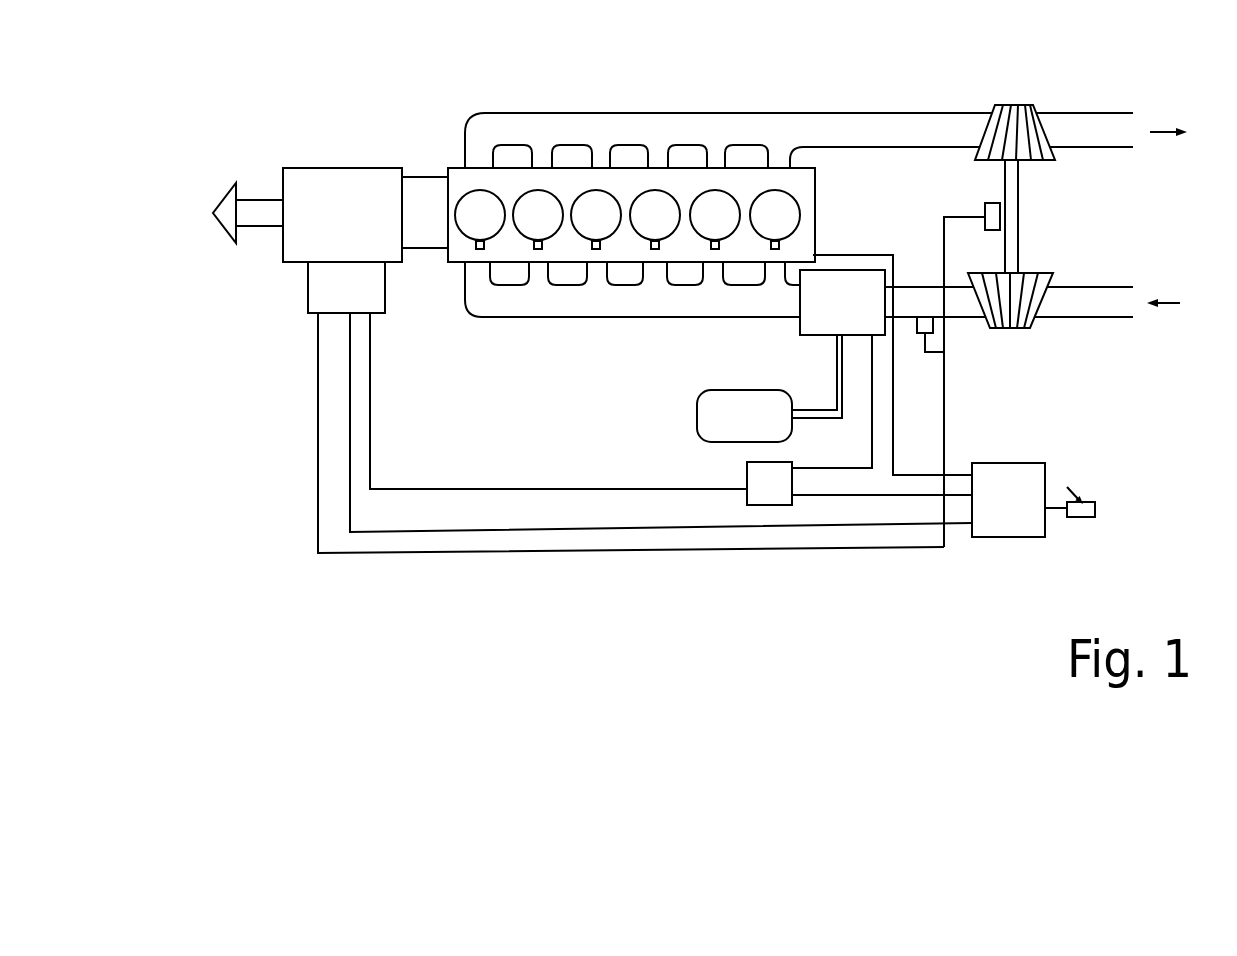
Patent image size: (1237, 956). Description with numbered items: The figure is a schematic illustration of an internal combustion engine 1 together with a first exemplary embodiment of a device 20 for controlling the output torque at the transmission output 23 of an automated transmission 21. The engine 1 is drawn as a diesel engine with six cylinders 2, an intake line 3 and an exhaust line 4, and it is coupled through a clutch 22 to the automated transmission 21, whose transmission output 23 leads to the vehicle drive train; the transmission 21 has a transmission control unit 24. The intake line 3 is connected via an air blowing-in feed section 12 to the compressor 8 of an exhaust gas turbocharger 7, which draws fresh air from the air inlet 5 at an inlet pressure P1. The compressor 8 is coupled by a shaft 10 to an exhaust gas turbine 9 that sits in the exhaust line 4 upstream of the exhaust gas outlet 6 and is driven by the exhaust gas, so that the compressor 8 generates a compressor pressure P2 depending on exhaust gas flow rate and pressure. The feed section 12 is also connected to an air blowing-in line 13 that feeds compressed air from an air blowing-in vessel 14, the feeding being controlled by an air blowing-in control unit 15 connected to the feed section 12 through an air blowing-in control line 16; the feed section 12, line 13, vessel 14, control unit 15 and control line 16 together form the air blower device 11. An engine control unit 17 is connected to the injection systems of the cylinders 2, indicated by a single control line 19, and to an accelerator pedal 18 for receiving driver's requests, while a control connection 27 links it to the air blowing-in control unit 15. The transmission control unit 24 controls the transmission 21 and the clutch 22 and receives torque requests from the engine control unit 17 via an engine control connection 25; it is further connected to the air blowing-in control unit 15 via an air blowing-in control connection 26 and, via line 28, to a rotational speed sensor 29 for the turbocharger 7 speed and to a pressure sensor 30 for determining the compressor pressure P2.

The internal combustion engine 1 is at (455, 175).
The cylinders 2 is at (476, 208).
The intake line 3 is at (570, 303).
The exhaust line 4 is at (832, 132).
The air inlet 5 is at (1100, 303).
The exhaust gas outlet 6 is at (1110, 148).
The exhaust gas turbocharger 7 is at (1048, 99).
The compressor 8 is at (1003, 300).
The exhaust gas turbine 9 is at (1022, 107).
The shaft 10 is at (1020, 198).
The air blower device 11 is at (908, 605).
The air blowing-in feed section 12 is at (822, 287).
The air blowing-in line 13 is at (805, 418).
The air blowing-in vessel 14 is at (710, 413).
The air blowing-in control unit 15 is at (762, 490).
The air blowing-in control line 16 is at (842, 470).
The engine control unit 17 is at (993, 487).
The accelerator pedal 18 is at (1080, 508).
The control line 19 is at (688, 255).
The device for controlling an output torque 20 is at (507, 691).
The automated transmission 21 is at (302, 187).
The clutch 22 is at (418, 193).
The transmission output 23 is at (250, 208).
The transmission control unit 24 is at (325, 287).
The engine control connection 25 is at (537, 532).
The air blowing-in control connection 26 is at (428, 489).
The control connection 27 is at (905, 497).
The line 28 is at (460, 555).
The rotational speed sensor 29 is at (990, 205).
The pressure sensor 30 is at (920, 318).
The inlet pressure P1 is at (1130, 308).
The compressor pressure P2 is at (970, 305).